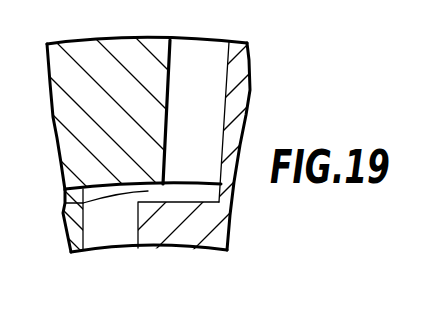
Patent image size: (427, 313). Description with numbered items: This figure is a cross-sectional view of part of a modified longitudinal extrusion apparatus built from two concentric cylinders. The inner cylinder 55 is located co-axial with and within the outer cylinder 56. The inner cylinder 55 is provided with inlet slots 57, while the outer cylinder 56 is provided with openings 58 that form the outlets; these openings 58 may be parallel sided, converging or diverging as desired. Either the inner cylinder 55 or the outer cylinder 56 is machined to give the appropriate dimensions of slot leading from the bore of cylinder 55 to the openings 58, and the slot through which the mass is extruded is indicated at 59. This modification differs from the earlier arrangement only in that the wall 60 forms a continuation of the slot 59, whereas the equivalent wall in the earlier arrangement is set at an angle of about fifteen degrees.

The inner cylinder 55 is at (193, 231).
The outer cylinder 56 is at (92, 59).
The inlet slots 57 is at (114, 234).
The openings 58 is at (199, 56).
The slot 59 is at (83, 207).
The wall 60 is at (176, 207).